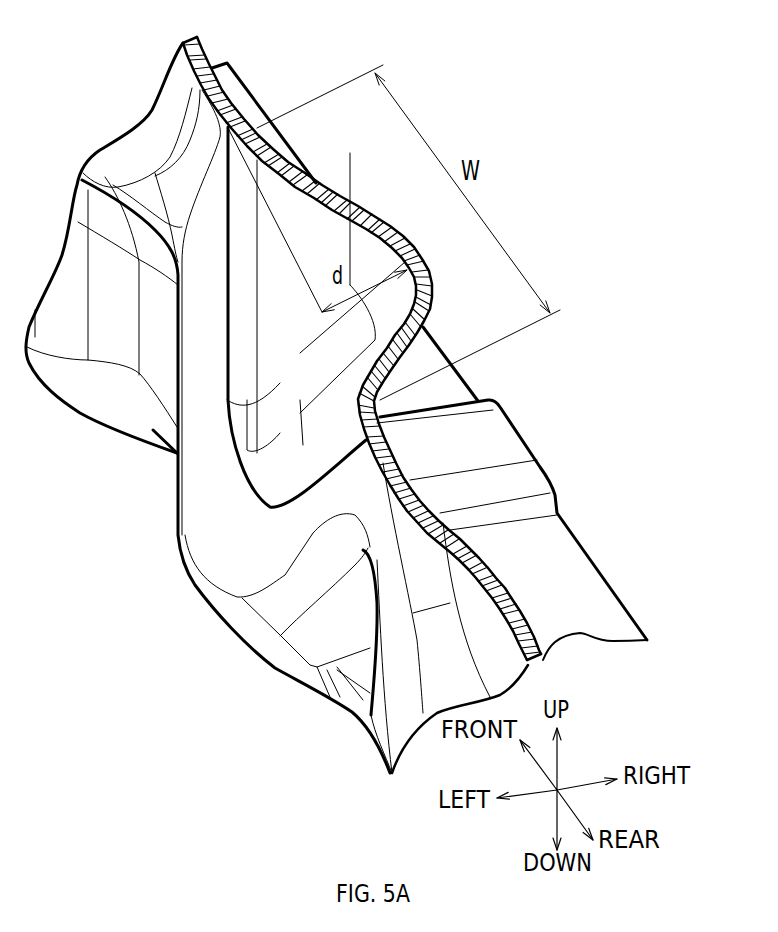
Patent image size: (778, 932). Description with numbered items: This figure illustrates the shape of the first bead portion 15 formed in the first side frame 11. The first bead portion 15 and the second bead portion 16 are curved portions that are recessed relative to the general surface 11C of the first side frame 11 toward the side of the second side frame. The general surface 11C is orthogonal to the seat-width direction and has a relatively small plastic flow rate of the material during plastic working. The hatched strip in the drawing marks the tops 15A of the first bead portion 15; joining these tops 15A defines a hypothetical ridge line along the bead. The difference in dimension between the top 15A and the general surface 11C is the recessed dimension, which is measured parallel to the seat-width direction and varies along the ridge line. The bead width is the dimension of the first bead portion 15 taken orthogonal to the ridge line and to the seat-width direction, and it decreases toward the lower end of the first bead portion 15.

The first side frame 11 is at (513, 417).
The general surface 11C is at (173, 112).
The first bead portion 15 is at (257, 440).
The top 15A is at (419, 262).
The second bead portion 16 is at (313, 642).